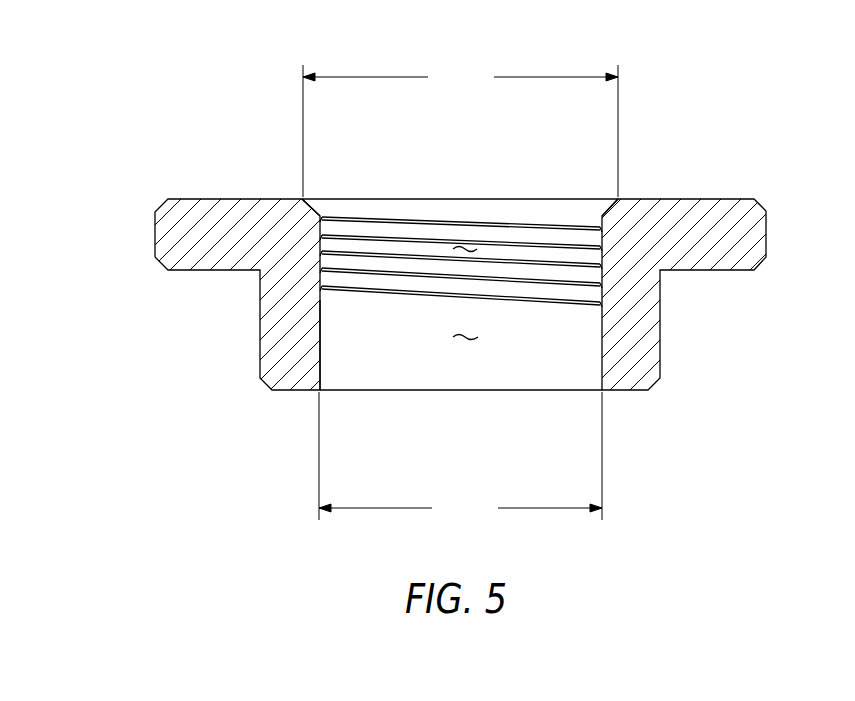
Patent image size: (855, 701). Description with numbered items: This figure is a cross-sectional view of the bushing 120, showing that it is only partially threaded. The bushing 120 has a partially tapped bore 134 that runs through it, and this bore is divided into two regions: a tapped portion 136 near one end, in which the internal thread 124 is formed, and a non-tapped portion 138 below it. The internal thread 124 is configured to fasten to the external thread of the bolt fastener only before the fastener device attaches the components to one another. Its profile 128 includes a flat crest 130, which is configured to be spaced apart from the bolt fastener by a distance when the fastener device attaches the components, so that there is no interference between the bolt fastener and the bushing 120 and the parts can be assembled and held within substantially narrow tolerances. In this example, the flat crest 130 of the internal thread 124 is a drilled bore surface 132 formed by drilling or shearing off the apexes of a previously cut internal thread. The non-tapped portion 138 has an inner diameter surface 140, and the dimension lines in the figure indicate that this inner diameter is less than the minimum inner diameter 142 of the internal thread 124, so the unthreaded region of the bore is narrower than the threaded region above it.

The bushing 120 is at (101, 218).
The internal thread 124 is at (314, 194).
The profile 128 is at (592, 218).
The flat crest 130 is at (323, 287).
The drilled bore surface 132 is at (594, 258).
The partially tapped bore 134 is at (344, 323).
The tapped portion 136 is at (463, 245).
The non-tapped portion 138 is at (463, 341).
The inner diameter surface 140 is at (468, 500).
The minimum inner diameter 142 is at (462, 64).